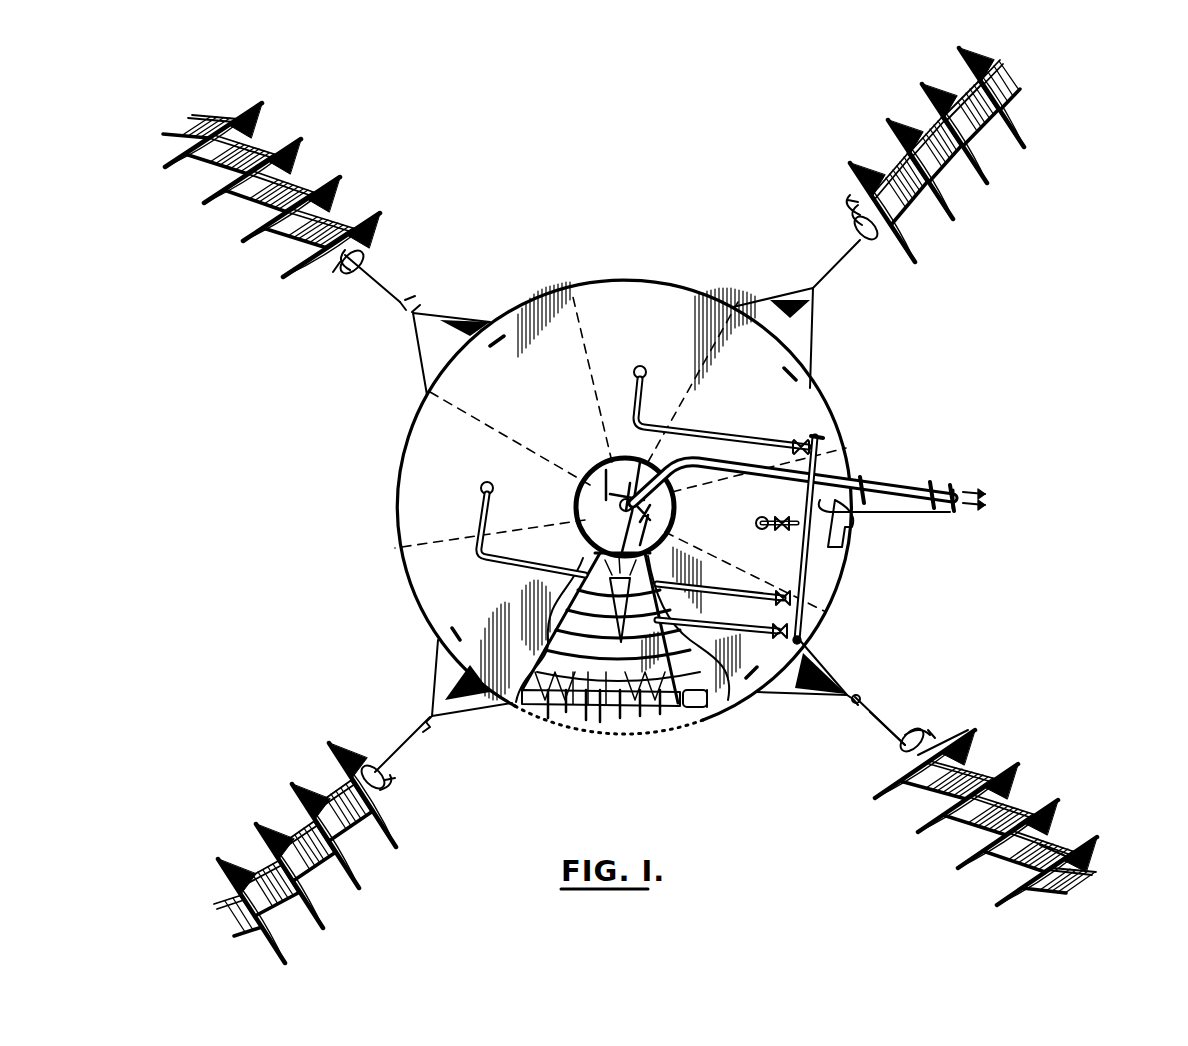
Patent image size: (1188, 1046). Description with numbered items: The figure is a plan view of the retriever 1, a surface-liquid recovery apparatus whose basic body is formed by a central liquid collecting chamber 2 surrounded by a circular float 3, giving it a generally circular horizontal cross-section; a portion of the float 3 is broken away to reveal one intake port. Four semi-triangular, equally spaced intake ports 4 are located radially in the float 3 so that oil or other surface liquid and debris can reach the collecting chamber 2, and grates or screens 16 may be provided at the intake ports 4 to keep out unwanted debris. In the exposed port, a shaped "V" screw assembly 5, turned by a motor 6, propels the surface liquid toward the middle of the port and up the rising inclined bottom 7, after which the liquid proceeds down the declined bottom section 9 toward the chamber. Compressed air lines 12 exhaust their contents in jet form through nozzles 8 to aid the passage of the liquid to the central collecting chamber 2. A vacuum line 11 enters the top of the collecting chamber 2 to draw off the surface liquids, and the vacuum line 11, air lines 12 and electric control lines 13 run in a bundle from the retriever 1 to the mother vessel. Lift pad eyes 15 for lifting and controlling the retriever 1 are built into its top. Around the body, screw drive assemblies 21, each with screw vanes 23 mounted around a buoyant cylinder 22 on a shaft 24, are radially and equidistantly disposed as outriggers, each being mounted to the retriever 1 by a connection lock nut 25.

The retriever 1 is at (878, 356).
The central liquid collecting chamber 2 is at (1130, 898).
The circular float 3 is at (468, 459).
The intake ports 4 is at (652, 305).
The "V" screw assembly 5 is at (628, 716).
The motor 6 is at (697, 708).
The inclined bottom 7 is at (583, 652).
The nozzles 8 is at (651, 505).
The declined bottom section 9 is at (588, 565).
The vacuum line 11 is at (900, 485).
The compressed air lines 12 is at (885, 508).
The electric control lines 13 is at (946, 512).
The lift pad eyes 15 is at (490, 348).
The grates or screens 16 is at (588, 748).
The screw drive assemblies 21 is at (322, 163).
The buoyant cylinders 22 is at (1058, 840).
The screw vanes 23 is at (962, 730).
The shaft 24 is at (888, 727).
The connection lock nut 25 is at (860, 698).